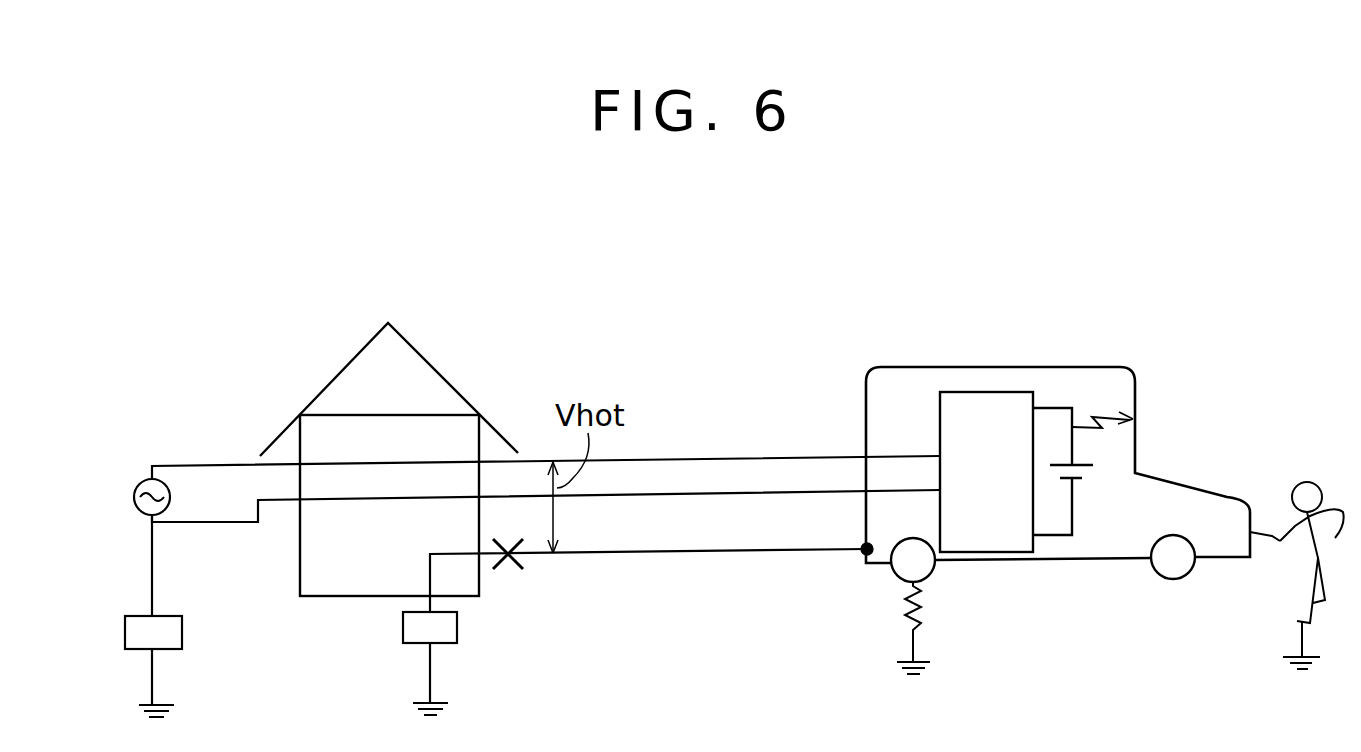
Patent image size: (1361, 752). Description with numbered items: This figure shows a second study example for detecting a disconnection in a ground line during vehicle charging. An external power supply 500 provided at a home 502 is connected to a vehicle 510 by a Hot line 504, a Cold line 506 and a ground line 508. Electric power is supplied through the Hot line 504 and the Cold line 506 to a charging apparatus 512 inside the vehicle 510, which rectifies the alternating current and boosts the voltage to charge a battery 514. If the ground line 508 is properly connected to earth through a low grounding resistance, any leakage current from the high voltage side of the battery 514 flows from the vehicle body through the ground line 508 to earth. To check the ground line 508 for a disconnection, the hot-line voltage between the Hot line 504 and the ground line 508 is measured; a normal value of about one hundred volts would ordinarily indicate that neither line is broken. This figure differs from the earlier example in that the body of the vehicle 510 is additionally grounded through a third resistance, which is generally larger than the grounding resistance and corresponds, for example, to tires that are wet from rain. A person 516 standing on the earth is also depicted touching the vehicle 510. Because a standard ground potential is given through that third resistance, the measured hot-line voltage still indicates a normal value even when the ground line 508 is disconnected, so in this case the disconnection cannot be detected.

The external power supply 500 is at (130, 496).
The home 502 is at (352, 358).
The Hot line 504 is at (694, 458).
The Cold line 506 is at (765, 492).
The ground line 508 is at (740, 553).
The vehicle 510 is at (910, 367).
The charging apparatus 512 is at (985, 392).
The battery 514 is at (1078, 466).
The person 516 is at (1305, 482).